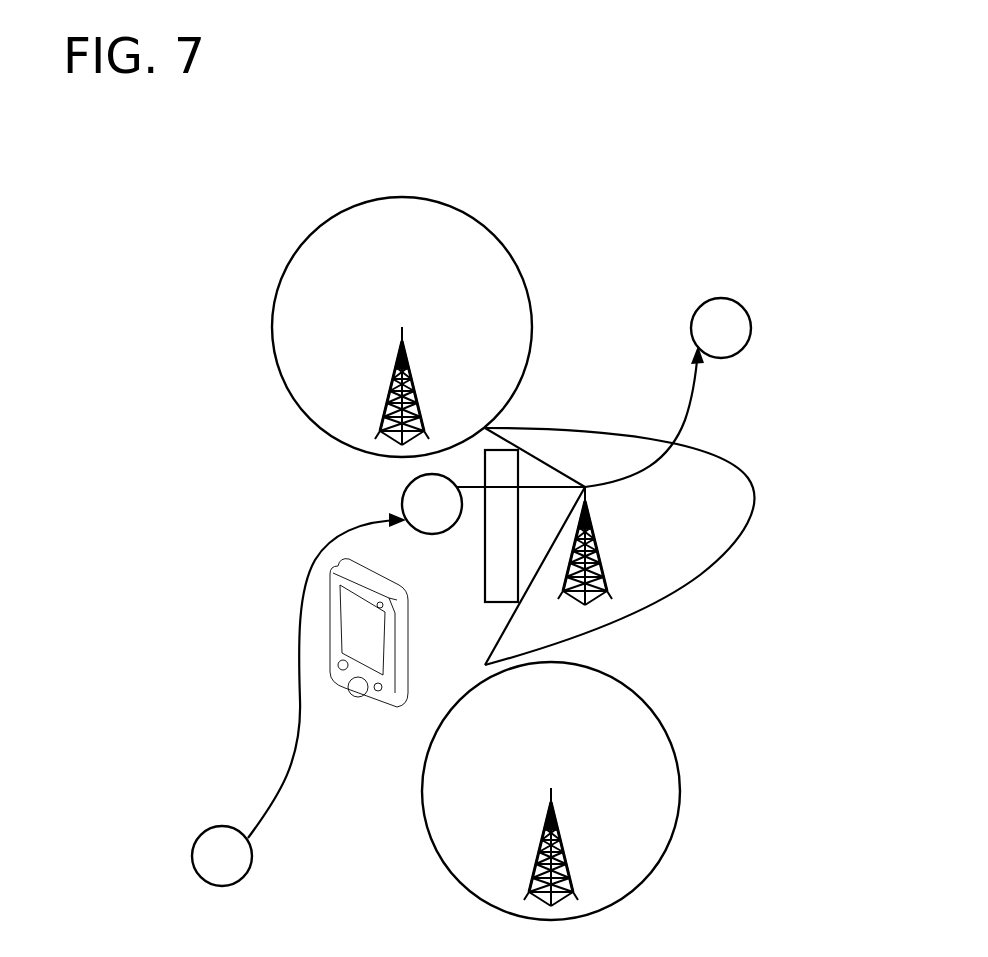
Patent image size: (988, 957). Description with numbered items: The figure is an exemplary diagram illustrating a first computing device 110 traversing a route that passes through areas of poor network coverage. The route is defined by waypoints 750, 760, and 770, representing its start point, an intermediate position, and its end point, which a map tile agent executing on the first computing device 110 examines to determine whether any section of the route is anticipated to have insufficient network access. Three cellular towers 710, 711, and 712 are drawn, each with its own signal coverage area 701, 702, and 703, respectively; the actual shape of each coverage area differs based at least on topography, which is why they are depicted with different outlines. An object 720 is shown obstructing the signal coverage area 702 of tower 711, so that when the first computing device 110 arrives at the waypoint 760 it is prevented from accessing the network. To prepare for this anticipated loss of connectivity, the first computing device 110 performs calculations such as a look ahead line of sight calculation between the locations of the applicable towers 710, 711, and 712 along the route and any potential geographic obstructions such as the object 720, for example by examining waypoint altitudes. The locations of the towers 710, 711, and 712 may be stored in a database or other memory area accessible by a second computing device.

The first computing device 110 is at (347, 622).
The signal coverage area 701 is at (275, 297).
The signal coverage area 702 is at (710, 455).
The signal coverage area 703 is at (682, 793).
The cellular tower 710 is at (388, 382).
The cellular tower 711 is at (595, 533).
The cellular tower 712 is at (565, 852).
The object 720 is at (503, 468).
The waypoint 750 is at (205, 830).
The waypoint 760 is at (405, 490).
The waypoint 770 is at (747, 308).